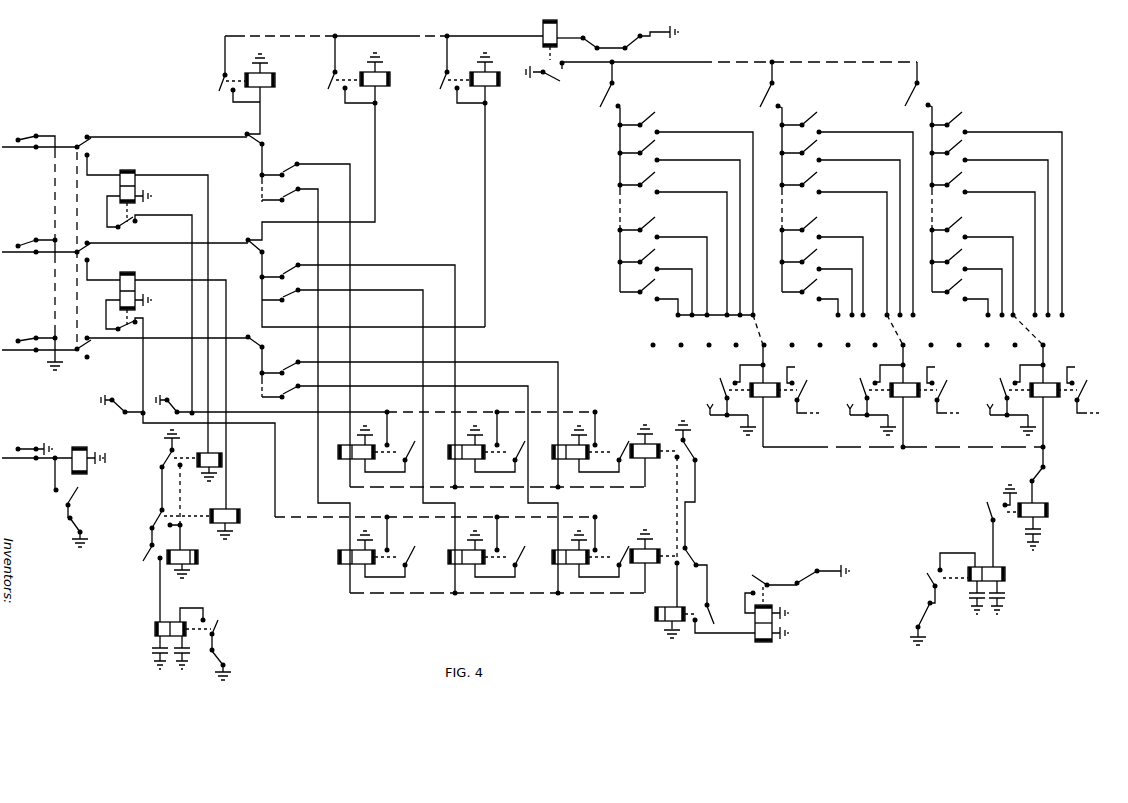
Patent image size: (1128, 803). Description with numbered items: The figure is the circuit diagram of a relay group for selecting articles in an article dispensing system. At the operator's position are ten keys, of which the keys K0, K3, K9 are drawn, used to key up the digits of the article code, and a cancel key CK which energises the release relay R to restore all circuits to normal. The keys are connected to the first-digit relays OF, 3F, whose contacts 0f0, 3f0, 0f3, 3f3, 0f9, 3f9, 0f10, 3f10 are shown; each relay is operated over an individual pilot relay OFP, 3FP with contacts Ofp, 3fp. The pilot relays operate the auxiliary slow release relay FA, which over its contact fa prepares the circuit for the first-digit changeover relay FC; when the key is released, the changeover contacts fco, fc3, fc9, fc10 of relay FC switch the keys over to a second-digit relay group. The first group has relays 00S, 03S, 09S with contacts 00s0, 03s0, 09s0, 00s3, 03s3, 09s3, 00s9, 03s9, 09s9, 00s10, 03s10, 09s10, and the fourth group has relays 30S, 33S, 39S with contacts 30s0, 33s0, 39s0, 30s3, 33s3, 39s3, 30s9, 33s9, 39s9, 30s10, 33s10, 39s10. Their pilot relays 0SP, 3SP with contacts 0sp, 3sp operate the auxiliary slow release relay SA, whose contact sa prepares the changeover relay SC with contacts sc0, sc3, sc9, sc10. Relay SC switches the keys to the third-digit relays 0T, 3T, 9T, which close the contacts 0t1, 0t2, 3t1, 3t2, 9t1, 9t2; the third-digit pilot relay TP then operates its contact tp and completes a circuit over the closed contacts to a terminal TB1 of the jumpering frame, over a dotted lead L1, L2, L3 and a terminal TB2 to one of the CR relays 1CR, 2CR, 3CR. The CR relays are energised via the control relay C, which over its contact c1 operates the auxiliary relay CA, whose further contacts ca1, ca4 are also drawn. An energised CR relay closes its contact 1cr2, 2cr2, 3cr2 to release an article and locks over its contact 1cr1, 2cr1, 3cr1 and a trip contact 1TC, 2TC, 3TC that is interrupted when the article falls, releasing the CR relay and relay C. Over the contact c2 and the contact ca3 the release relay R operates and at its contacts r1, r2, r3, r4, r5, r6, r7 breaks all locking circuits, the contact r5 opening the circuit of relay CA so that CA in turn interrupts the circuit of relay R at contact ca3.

The key K0 is at (39, 135).
The key K3 is at (39, 238).
The key K9 is at (39, 336).
The first-digit changeover relay contact fco is at (161, 155).
The first-digit changeover relay contact fc3 is at (162, 261).
The first-digit changeover relay contact fc9 is at (162, 348).
The first-digit relay OF is at (164, 303).
The first-digit relay contact 0f10 is at (149, 304).
The first-digit relay 3F is at (173, 382).
The first-digit relay contact 3f10 is at (190, 408).
The release relay contact r1 is at (123, 401).
The release relay contact r2 is at (175, 401).
The cancel key CK is at (37, 447).
The release relay R is at (88, 454).
The auxiliary relay contact ca3 is at (77, 488).
The control relay contact c2 is at (84, 532).
The first-digit pilot relay OFP is at (200, 462).
The first-digit pilot relay contact Ofp is at (167, 479).
The first-digit pilot relay contact 3fp is at (170, 529).
The first-digit pilot relay 3FP is at (219, 516).
The auxiliary slow release relay contact fa is at (150, 583).
The auxiliary slow release relay FA is at (183, 557).
The first-digit changeover relay FC is at (160, 645).
The first-digit changeover relay contact fc10 is at (216, 629).
The release relay contact r3 is at (226, 664).
The second-digit changeover relay contact sc0 is at (267, 166).
The second-digit changeover relay contact sc3 is at (366, 282).
The second-digit changeover relay contact sc9 is at (266, 365).
The first-digit relay contact 0f0 is at (306, 325).
The first-digit relay contact 3f0 is at (306, 390).
The first-digit relay contact 0f3 is at (358, 375).
The first-digit relay contact 3f3 is at (358, 441).
The first-digit relay contact 0f9 is at (410, 424).
The first-digit relay contact 3f9 is at (410, 489).
The third-digit relay 0T is at (252, 94).
The third-digit relay contact 0t1 is at (232, 73).
The third-digit relay 3T is at (319, 146).
The third-digit relay contact 3t1 is at (345, 72).
The third-digit relay 9T is at (477, 190).
The third-digit relay contact 9t1 is at (454, 72).
The third-digit pilot relay TP is at (549, 36).
The third-digit pilot relay contact tp is at (552, 73).
The contact ca4 is at (604, 41).
The release relay contact r7 is at (651, 42).
The third-digit relay contact 0t2 is at (623, 176).
The third-digit relay contact 3t2 is at (782, 176).
The third-digit relay contact 9t2 is at (923, 177).
The second-digit relay contact 00s0 is at (687, 215).
The second-digit relay contact 03s0 is at (680, 229).
The second-digit relay contact 09s0 is at (674, 245).
The second-digit relay contact 30s0 is at (664, 267).
The second-digit relay contact 33s0 is at (656, 283).
The second-digit relay contact 39s0 is at (654, 298).
The second-digit relay contact 00s3 is at (848, 215).
The second-digit relay contact 03s3 is at (841, 229).
The second-digit relay contact 09s3 is at (835, 245).
The second-digit relay contact 30s3 is at (823, 267).
The second-digit relay contact 33s3 is at (817, 283).
The second-digit relay contact 39s3 is at (815, 298).
The second-digit relay contact 00s9 is at (997, 215).
The second-digit relay contact 03s9 is at (990, 229).
The second-digit relay contact 09s9 is at (984, 245).
The second-digit relay contact 30s9 is at (973, 267).
The second-digit relay contact 33s9 is at (967, 283).
The second-digit relay contact 39s9 is at (965, 298).
The jumpering frame terminal TB1 is at (697, 315).
The jumpering frame terminal TB2 is at (831, 345).
The lead L1 is at (768, 381).
The lead L2 is at (905, 382).
The lead L3 is at (1038, 382).
The CR relay 1CR is at (772, 399).
The CR relay locking contact 1cr1 is at (738, 383).
The CR relay release contact 1cr2 is at (802, 390).
The trip contact 1TC is at (731, 417).
The CR relay 2CR is at (912, 399).
The CR relay locking contact 2cr1 is at (878, 383).
The CR relay release contact 2cr2 is at (942, 390).
The trip contact 2TC is at (871, 417).
The CR relay 3CR is at (1052, 399).
The CR relay locking contact 3cr1 is at (1018, 383).
The CR relay release contact 3cr2 is at (1082, 390).
The trip contact 3TC is at (1011, 417).
The release relay contact r6 is at (1045, 475).
The control relay C is at (1040, 526).
The control relay contact c1 is at (1002, 526).
The auxiliary relay CA is at (998, 590).
The relay contact ca1 is at (947, 577).
The release relay contact r5 is at (917, 623).
The second-digit relay 00S is at (363, 449).
The second-digit relay contact 00s10 is at (389, 449).
The second-digit relay 03S is at (471, 449).
The second-digit relay contact 03s10 is at (499, 449).
The second-digit relay 09S is at (576, 449).
The second-digit relay contact 09s10 is at (603, 449).
The second-digit relay 30S is at (361, 554).
The second-digit relay contact 30s10 is at (389, 555).
The second-digit relay 33S is at (471, 554).
The second-digit relay contact 33s10 is at (499, 555).
The second-digit relay 39S is at (574, 554).
The second-digit relay contact 39s10 is at (603, 555).
The second-digit pilot relay 0SP is at (637, 441).
The second-digit pilot relay 3SP is at (637, 547).
The second-digit pilot relay contact 0sp is at (695, 492).
The second-digit pilot relay contact 3sp is at (703, 577).
The auxiliary slow release relay SA is at (657, 600).
The auxiliary slow release relay contact sa is at (720, 621).
The second-digit changeover relay SC is at (770, 634).
The second-digit changeover relay contact sc10 is at (759, 594).
The release relay contact r4 is at (822, 579).